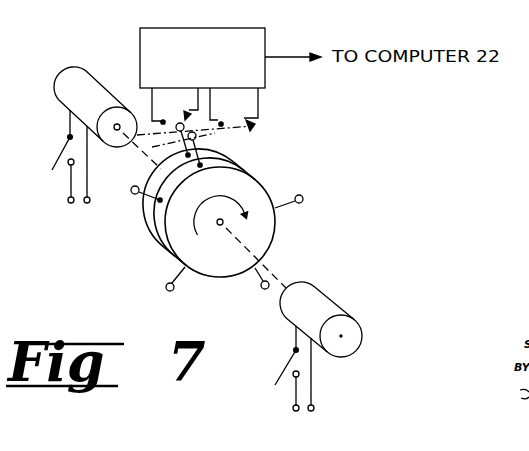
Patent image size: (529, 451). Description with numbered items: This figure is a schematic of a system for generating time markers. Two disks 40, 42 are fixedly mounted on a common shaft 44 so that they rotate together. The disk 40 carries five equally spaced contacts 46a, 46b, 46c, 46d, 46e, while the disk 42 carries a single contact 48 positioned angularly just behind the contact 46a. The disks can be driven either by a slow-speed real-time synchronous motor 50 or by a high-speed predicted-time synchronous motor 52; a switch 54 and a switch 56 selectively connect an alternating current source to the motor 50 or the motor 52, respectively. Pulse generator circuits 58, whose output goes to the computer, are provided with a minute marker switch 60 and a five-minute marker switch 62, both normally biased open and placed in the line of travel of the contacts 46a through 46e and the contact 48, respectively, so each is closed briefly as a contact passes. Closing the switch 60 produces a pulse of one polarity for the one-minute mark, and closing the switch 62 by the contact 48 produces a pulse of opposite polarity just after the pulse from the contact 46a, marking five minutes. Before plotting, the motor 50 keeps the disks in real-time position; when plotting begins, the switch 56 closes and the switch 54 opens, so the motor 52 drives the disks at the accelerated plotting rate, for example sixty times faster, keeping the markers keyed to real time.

The disk 40 is at (157, 222).
The disk 42 is at (152, 181).
The shaft 44 is at (274, 267).
The contact 46a is at (198, 138).
The contact 46b is at (301, 195).
The contact 46c is at (262, 289).
The contact 46d is at (166, 290).
The contact 46e is at (131, 192).
The contact 48 is at (177, 125).
The slow-speed real-time synchronous motor 50 is at (330, 305).
The high-speed predicted-time synchronous motor 52 is at (62, 100).
The switch 54 is at (293, 351).
The switch 56 is at (67, 138).
The pulse generator circuits 58 is at (210, 28).
The minute marker switch 60 is at (229, 121).
The five-minute marker switch 62 is at (167, 118).